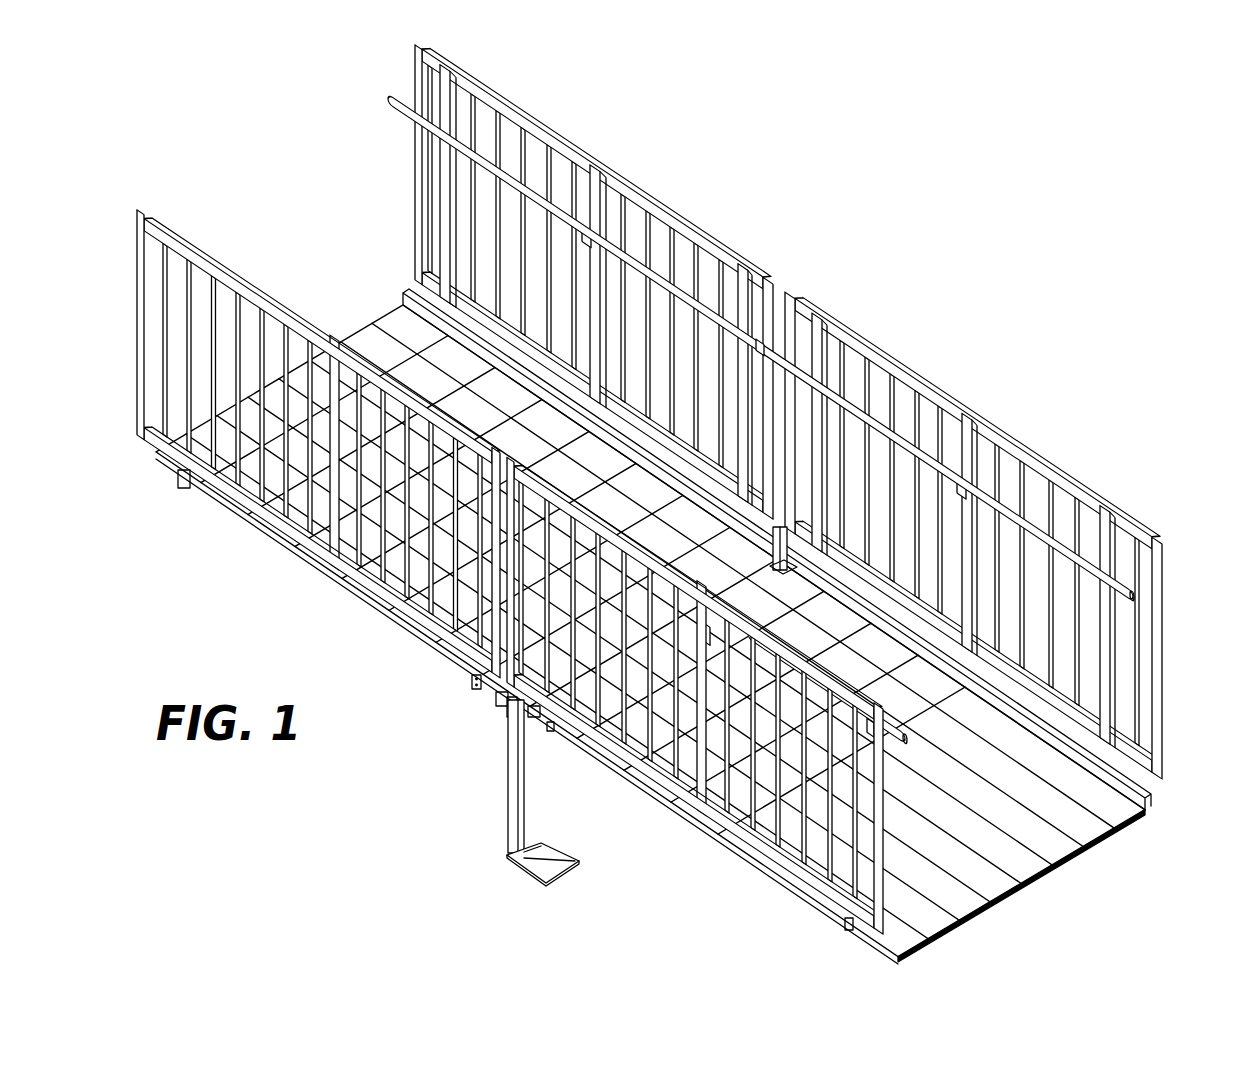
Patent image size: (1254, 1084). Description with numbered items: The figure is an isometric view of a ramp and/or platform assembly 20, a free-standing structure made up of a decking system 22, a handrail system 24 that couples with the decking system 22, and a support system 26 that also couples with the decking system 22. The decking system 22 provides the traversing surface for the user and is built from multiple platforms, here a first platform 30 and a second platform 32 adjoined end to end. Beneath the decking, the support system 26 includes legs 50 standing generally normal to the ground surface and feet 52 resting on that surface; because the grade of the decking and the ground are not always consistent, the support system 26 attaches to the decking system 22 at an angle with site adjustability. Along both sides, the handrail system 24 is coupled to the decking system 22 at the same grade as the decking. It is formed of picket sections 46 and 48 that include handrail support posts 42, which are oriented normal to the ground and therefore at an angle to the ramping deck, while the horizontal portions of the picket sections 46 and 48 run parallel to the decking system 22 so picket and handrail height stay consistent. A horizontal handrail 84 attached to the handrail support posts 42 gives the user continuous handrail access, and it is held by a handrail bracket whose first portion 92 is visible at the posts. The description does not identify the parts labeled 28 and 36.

The ramp and/or platform assembly 20 is at (668, 492).
The decking system 22 is at (1014, 823).
The handrail system 24 is at (918, 733).
The support system 26 is at (530, 815).
The support bracket 28 is at (497, 710).
The first platform 30 is at (318, 442).
The second platform 32 is at (695, 693).
The railing mounting bracket 36 is at (490, 688).
The handrail support post 42 is at (963, 530).
The picket section 46 is at (596, 280).
The picket section 48 is at (977, 534).
The leg 50 is at (523, 786).
The foot 52 is at (560, 883).
The horizontal handrail 84 is at (774, 364).
The first portion 92 is at (761, 347).